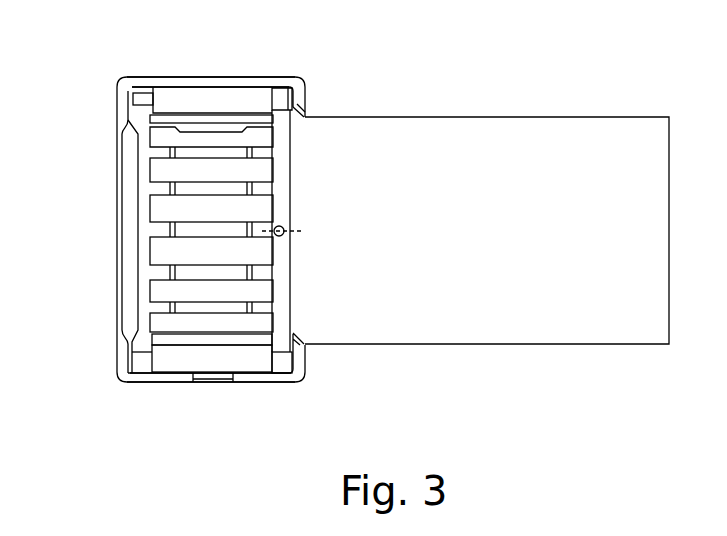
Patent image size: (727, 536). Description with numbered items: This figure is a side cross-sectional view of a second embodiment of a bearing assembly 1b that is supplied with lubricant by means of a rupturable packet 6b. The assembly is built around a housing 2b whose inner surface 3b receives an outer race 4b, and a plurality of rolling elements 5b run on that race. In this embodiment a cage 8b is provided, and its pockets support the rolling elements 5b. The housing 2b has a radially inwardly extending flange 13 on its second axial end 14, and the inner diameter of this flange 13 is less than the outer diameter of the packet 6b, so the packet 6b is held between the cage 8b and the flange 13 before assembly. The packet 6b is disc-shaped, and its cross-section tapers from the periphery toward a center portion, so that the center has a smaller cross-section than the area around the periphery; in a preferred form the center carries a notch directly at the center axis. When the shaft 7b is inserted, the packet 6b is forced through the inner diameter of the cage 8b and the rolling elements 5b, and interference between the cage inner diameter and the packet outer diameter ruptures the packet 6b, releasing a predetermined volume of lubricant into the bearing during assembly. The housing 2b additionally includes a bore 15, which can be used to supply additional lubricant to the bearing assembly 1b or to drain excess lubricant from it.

The bearing assembly 1b is at (490, 117).
The housing 2b is at (117, 108).
The inner surface of housing 3b is at (168, 378).
The outer race 4b is at (213, 82).
The rolling elements 5b is at (173, 361).
The packet 6b is at (283, 306).
The shaft 7b is at (615, 140).
The cage 8b is at (279, 102).
The radially inwardly extending flange 13 is at (307, 365).
The second axial end of housing 14 is at (306, 104).
The bore 15 is at (213, 382).